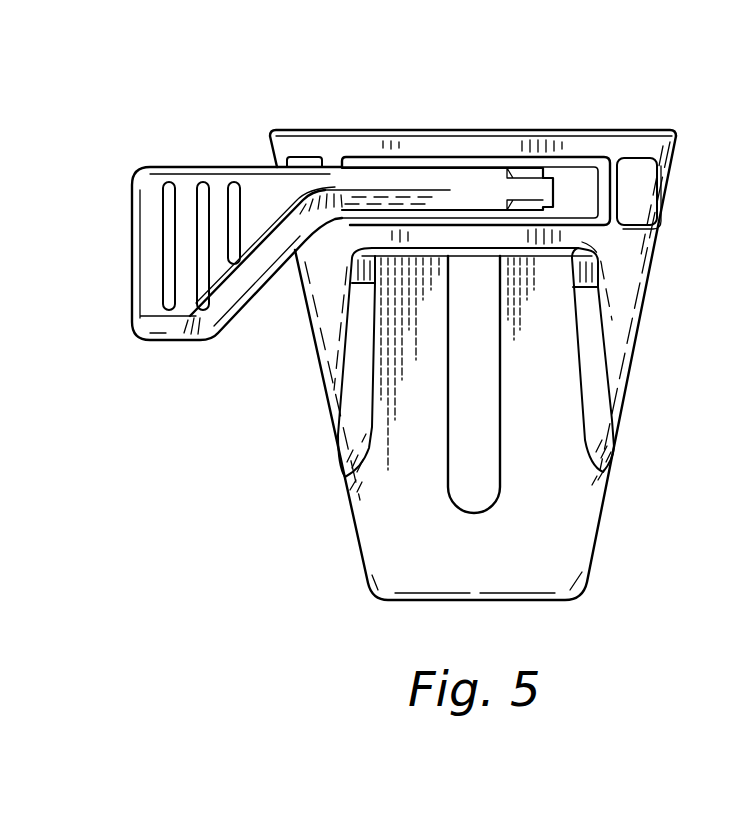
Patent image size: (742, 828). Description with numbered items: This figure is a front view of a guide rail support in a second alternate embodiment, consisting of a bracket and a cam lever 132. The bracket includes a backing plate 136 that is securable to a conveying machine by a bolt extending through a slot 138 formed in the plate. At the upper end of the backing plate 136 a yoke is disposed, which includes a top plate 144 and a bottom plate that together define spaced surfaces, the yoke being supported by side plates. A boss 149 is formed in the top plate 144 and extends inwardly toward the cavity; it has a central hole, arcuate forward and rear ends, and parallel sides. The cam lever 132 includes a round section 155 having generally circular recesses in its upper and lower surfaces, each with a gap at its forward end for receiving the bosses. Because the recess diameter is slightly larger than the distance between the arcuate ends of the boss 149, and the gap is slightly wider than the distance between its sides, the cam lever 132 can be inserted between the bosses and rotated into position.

The cam lever 132 is at (183, 327).
The backing plate 136 is at (640, 432).
The slot 138 is at (495, 418).
The top plate 144 is at (363, 130).
The boss 149 is at (383, 165).
The round section 155 is at (472, 172).